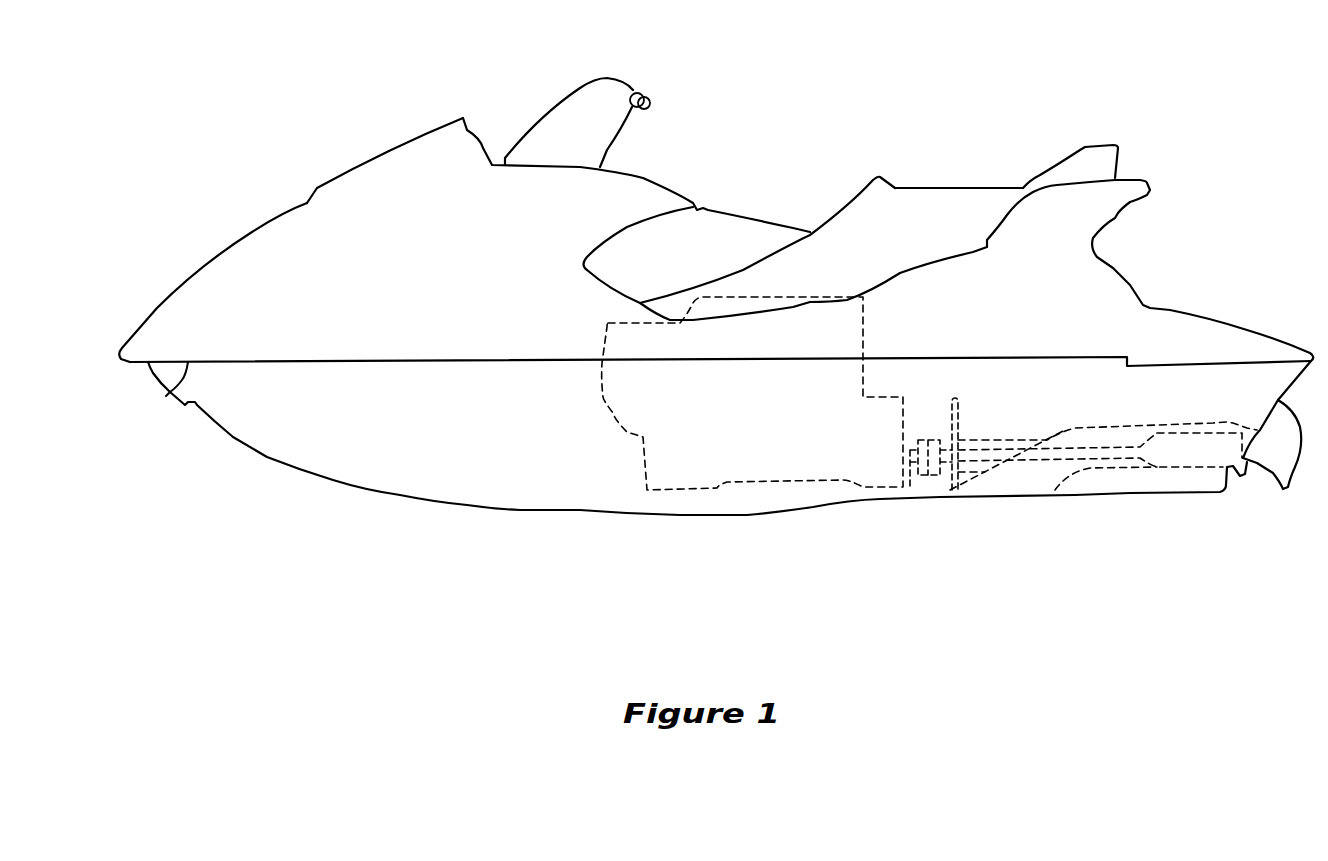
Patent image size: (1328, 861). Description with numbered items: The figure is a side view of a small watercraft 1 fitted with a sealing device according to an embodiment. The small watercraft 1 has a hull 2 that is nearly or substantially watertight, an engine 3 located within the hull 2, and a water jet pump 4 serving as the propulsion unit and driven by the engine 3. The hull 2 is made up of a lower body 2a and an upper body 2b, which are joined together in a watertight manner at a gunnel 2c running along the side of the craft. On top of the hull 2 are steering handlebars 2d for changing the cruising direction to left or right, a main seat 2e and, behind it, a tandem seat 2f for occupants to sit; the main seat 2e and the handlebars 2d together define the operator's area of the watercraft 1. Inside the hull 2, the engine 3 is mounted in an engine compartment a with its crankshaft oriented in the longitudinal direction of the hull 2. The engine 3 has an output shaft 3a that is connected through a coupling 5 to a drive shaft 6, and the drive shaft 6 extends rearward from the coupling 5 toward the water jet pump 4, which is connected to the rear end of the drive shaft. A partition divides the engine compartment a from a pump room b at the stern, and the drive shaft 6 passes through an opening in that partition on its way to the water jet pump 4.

The small watercraft 1 is at (783, 133).
The hull 2 is at (362, 148).
The lower body 2a is at (402, 483).
The upper body 2b is at (252, 232).
The gunnel 2c is at (170, 392).
The steering handlebars 2d is at (632, 94).
The main seat 2e is at (782, 222).
The tandem seat 2f is at (947, 188).
The engine 3 is at (760, 493).
The output shaft 3a is at (912, 497).
The water jet pump 4 is at (1130, 500).
The coupling 5 is at (932, 498).
The drive shaft 6 is at (1037, 467).
The engine compartment a is at (883, 373).
The pump room b is at (1085, 387).